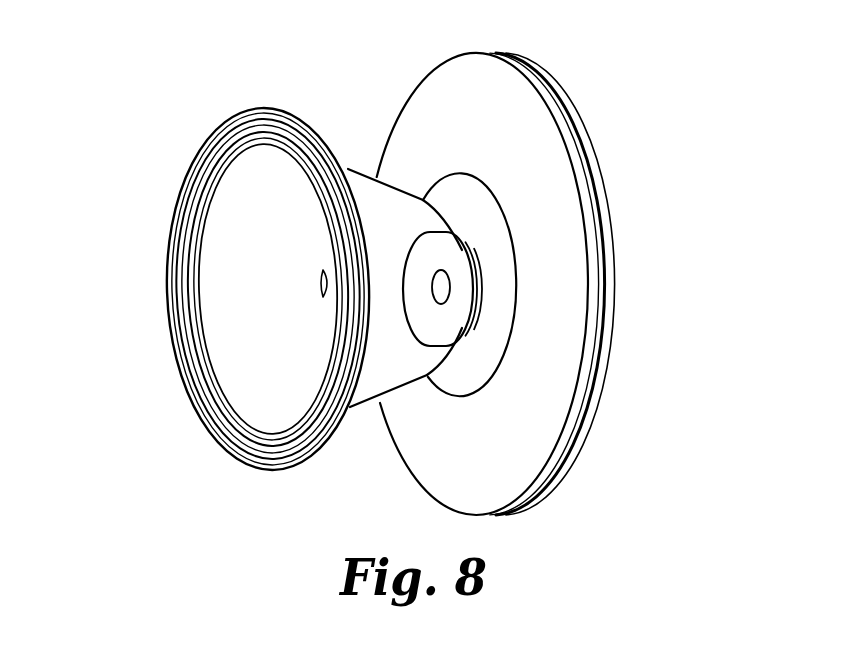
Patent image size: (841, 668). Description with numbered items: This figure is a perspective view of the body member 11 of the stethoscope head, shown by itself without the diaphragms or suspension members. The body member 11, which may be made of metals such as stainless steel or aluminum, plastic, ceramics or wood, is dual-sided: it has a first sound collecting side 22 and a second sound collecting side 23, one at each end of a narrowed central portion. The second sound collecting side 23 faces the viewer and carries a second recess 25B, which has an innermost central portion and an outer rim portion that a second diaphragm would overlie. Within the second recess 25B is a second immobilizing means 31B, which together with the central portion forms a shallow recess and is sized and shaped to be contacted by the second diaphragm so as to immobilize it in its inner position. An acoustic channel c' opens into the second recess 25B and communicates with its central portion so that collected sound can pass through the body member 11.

The body member 11 is at (547, 74).
The first sound collecting side 22 is at (655, 233).
The second sound collecting side 23 is at (212, 262).
The second recess 25B is at (259, 321).
The second immobilizing means 31B is at (238, 148).
The acoustic channel c' is at (302, 260).